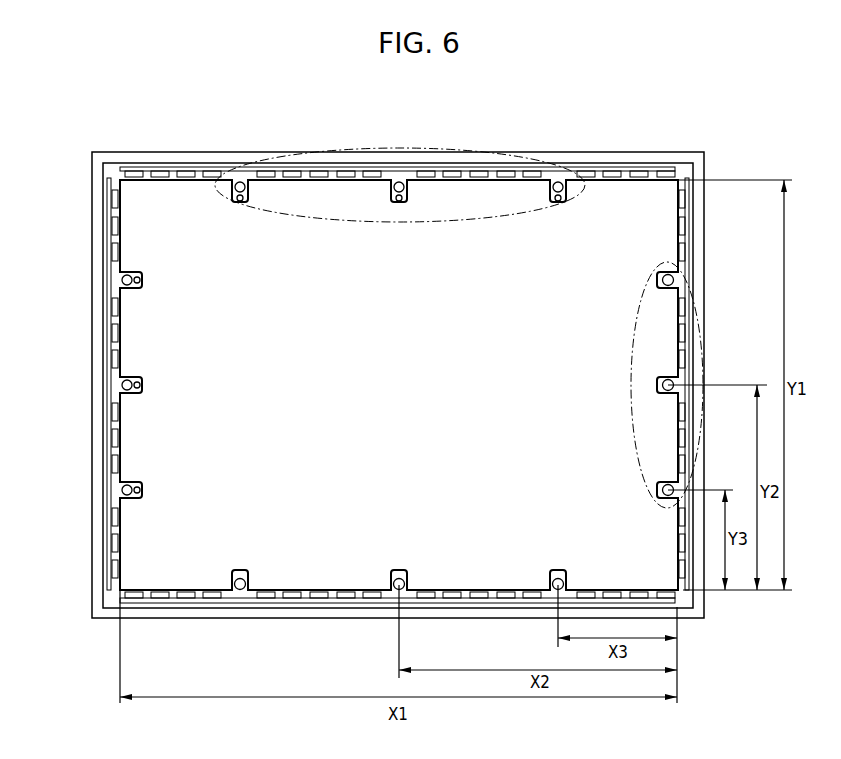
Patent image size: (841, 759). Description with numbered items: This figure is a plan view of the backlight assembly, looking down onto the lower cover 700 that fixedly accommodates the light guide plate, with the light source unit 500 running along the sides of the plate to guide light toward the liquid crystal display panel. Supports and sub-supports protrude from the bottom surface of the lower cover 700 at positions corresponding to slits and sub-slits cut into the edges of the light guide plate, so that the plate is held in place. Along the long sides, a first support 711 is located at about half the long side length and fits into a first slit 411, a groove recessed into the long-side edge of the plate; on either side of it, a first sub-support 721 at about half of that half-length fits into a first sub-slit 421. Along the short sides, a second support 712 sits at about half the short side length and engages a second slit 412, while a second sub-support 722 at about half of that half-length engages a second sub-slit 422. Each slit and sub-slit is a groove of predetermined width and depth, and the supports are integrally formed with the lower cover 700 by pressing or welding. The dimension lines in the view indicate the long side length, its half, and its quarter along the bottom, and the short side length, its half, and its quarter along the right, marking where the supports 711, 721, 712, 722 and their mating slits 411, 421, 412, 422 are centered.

The light source unit 500 is at (110, 242).
The lower cover 700 is at (97, 297).
The first support 711 is at (399, 182).
The first sub-support 721 is at (240, 182).
The second support 712 is at (125, 384).
The second sub-support 722 is at (125, 279).
The first slit 411 is at (399, 203).
The first sub-slit 421 is at (243, 203).
The second slit 412 is at (141, 376).
The second sub-slit 422 is at (141, 271).